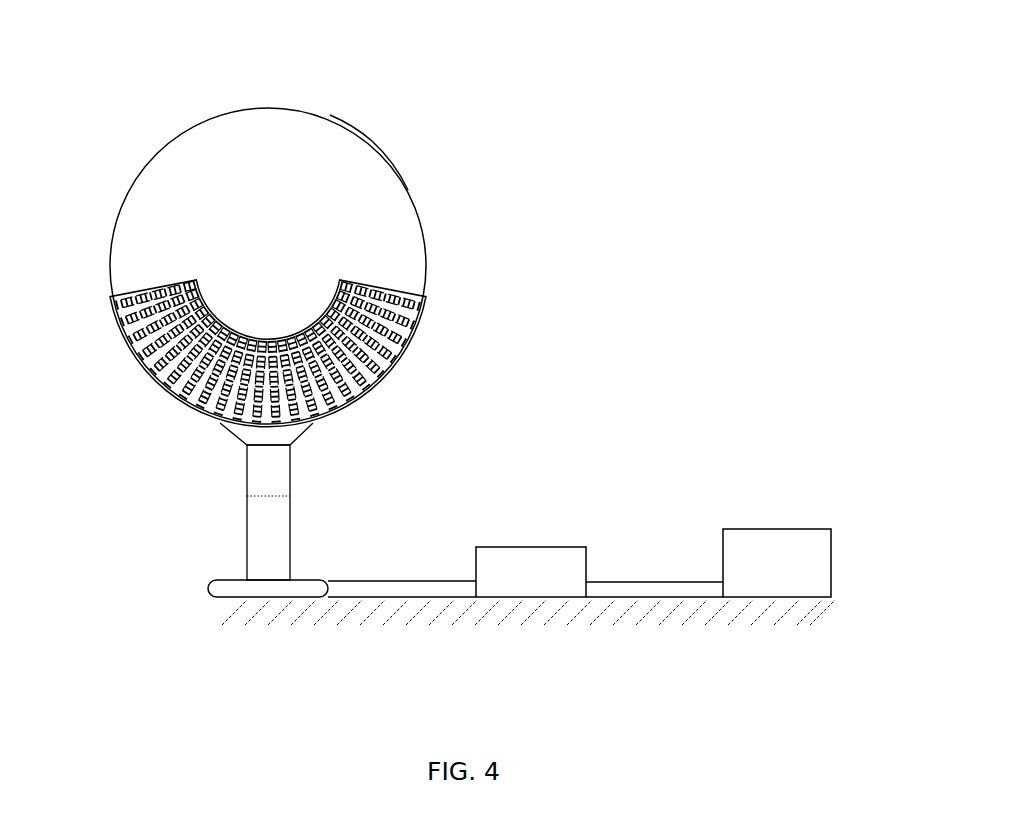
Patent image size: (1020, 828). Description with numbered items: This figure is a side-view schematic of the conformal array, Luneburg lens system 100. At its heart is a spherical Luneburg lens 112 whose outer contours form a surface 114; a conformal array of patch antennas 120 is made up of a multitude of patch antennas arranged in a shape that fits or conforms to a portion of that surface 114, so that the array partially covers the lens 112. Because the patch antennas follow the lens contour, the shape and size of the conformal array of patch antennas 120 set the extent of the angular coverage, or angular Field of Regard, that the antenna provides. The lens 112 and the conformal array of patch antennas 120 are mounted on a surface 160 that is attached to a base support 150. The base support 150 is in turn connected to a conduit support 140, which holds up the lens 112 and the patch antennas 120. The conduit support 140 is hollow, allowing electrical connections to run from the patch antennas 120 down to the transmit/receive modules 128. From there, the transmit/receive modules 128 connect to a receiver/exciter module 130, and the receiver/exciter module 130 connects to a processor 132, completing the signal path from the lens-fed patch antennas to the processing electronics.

The conformal array, Luneburg lens system 100 is at (337, 112).
The Luneburg lens 112 is at (358, 135).
The surface 114 is at (398, 175).
The conformal array of patch antennas 120 is at (312, 341).
The surface 160 is at (137, 296).
The transmit/receive modules 128 is at (273, 499).
The conduit support 140 is at (245, 496).
The base support 150 is at (210, 580).
The receiver/exciter module 130 is at (498, 546).
The processor 132 is at (743, 529).